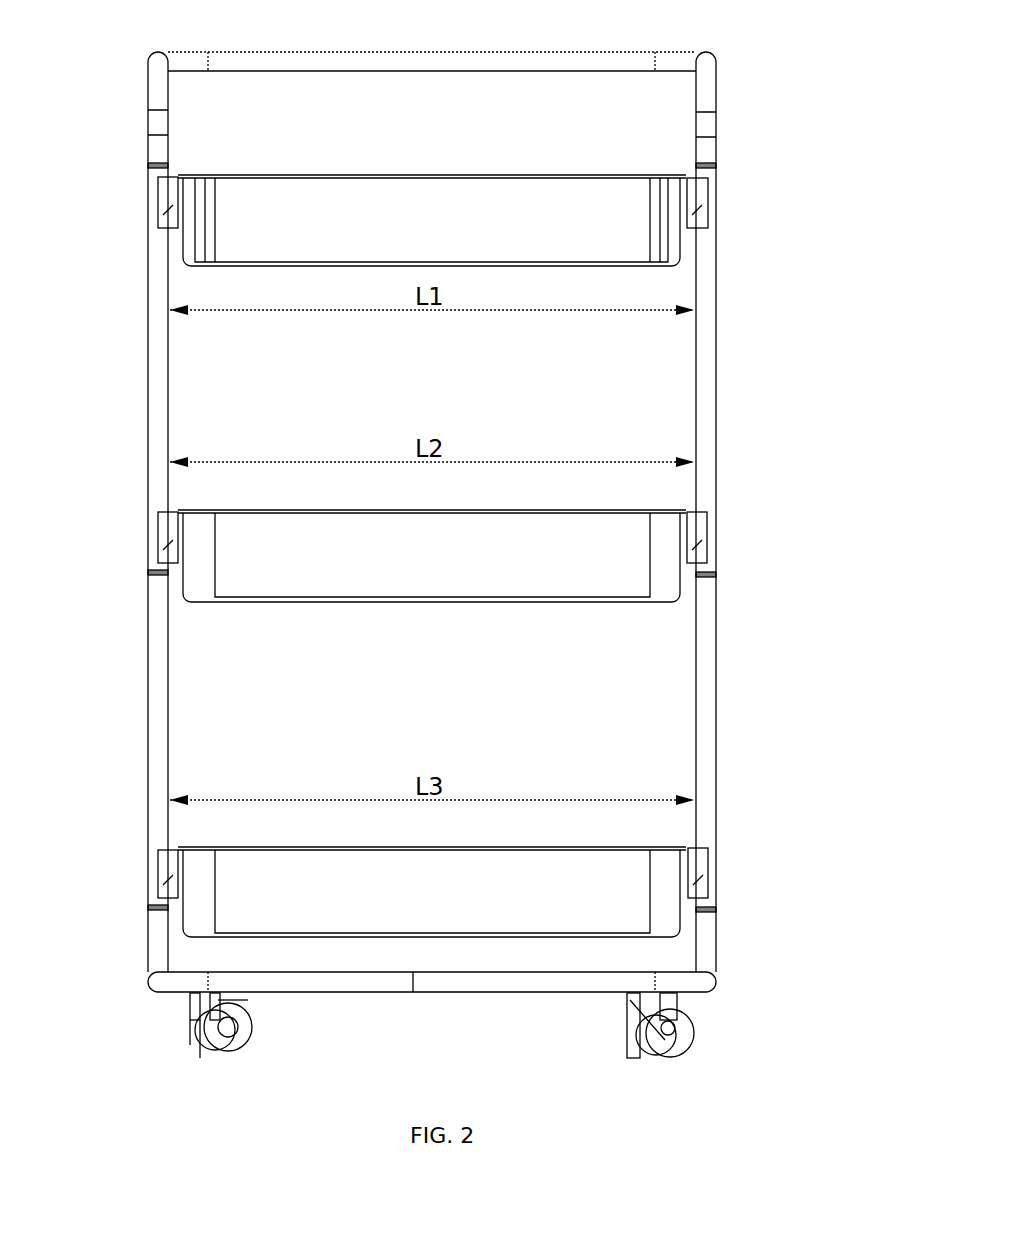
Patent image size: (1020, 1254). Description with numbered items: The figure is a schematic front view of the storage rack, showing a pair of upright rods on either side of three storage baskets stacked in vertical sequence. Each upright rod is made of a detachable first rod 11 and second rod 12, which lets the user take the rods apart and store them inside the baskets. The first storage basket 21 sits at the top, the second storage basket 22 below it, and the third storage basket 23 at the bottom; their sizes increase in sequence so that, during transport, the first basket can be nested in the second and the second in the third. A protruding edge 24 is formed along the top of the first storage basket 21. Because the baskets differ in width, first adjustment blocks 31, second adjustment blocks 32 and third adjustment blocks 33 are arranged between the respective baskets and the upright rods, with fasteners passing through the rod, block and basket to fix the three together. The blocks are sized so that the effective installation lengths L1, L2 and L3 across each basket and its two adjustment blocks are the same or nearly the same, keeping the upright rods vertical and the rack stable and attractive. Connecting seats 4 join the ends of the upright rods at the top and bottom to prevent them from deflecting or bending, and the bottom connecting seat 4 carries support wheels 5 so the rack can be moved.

The connecting seat 4 is at (338, 63).
The support wheel 5 is at (225, 1035).
The first rod 11 is at (156, 720).
The second rod 12 is at (156, 382).
The first storage basket 21 is at (392, 195).
The second storage basket 22 is at (475, 580).
The third storage basket 23 is at (523, 912).
The protruding edge 24 is at (178, 178).
The first adjustment block 31 is at (167, 203).
The second adjustment block 32 is at (168, 525).
The third adjustment block 33 is at (165, 863).